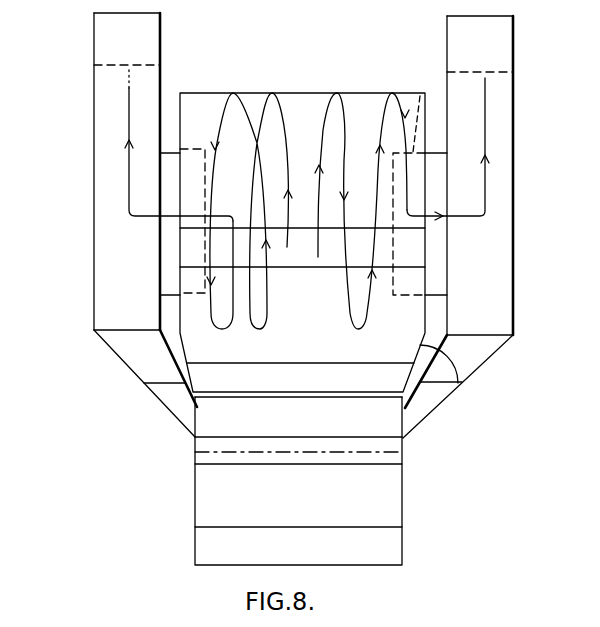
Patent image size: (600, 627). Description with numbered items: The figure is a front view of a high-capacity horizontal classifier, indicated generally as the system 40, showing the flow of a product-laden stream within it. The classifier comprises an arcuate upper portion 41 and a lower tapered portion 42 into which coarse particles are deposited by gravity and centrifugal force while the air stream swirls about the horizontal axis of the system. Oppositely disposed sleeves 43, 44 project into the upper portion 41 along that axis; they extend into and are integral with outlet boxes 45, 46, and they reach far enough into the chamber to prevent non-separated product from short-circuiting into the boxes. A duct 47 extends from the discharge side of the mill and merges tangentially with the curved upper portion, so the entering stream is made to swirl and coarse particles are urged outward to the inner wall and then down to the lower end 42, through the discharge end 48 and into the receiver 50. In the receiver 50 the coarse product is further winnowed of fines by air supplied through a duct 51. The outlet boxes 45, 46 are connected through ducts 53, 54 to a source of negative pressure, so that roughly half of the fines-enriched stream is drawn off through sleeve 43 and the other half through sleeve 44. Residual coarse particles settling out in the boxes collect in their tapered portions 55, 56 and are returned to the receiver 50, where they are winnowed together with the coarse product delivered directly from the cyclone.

The horizontal classifier system 40 is at (291, 92).
The arcuate upper portion 41 is at (364, 92).
The lower tapered portion 42 is at (458, 379).
The sleeve 43 is at (203, 149).
The sleeve 44 is at (417, 94).
The outlet box 45 is at (95, 182).
The outlet box 46 is at (507, 168).
The duct 47 is at (415, 226).
The discharge end 48 is at (400, 430).
The receiver 50 is at (400, 518).
The duct 51 is at (397, 470).
The duct 53 is at (95, 33).
The duct 54 is at (497, 44).
The tapered portion 55 is at (122, 353).
The tapered portion 56 is at (490, 349).